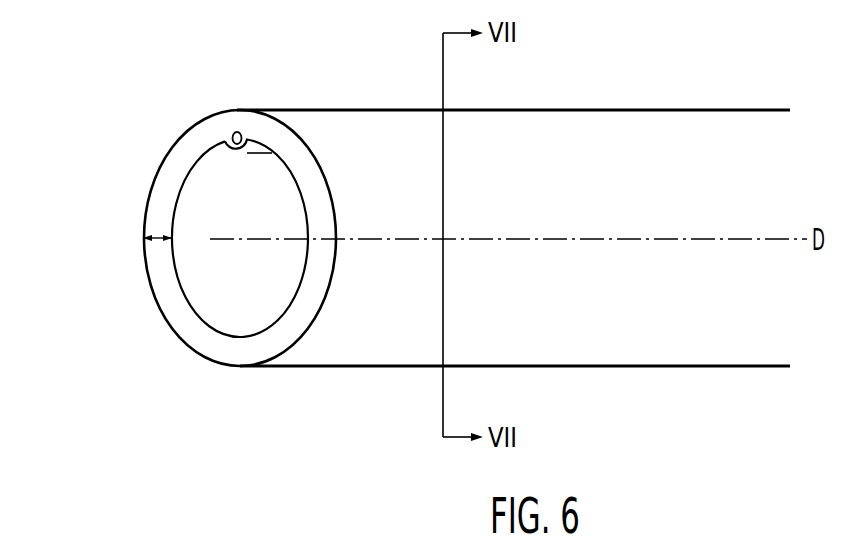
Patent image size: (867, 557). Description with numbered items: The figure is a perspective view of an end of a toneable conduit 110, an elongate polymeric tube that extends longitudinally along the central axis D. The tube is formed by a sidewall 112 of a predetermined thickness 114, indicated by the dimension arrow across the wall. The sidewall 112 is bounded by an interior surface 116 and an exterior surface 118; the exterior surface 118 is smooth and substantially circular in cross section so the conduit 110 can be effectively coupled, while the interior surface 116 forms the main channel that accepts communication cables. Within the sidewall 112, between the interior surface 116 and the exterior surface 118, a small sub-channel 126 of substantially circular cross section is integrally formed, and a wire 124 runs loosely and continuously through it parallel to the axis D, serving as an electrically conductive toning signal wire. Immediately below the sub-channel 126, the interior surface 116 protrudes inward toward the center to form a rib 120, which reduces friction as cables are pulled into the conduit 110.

The toneable conduit 110 is at (693, 368).
The sidewall 112 is at (210, 226).
The thickness 114 is at (143, 250).
The interior surface 116 is at (197, 292).
The exterior surface 118 is at (190, 348).
The rib 120 is at (236, 152).
The wire 124 is at (237, 95).
The sub-channel 126 is at (237, 132).